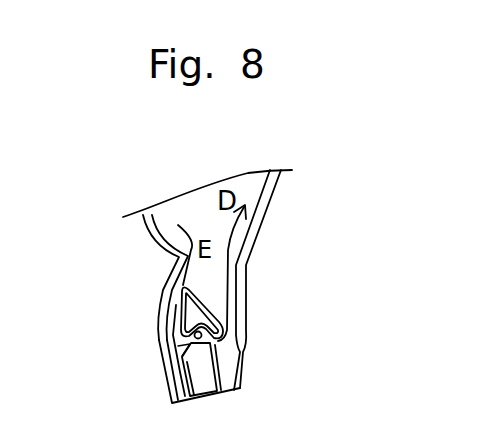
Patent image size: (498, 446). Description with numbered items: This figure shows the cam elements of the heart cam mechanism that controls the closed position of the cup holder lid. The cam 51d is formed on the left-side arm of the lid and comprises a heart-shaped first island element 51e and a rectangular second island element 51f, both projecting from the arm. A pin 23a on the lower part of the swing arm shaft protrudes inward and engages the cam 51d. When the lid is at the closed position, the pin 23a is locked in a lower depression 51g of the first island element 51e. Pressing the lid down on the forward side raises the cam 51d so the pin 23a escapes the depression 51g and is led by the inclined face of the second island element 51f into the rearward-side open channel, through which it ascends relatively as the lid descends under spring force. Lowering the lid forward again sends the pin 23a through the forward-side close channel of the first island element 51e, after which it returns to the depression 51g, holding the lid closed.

The cam 51d is at (250, 242).
The first island element 51e is at (183, 302).
The second island element 51f is at (195, 388).
The depression 51g is at (193, 337).
The pin 23a is at (222, 328).